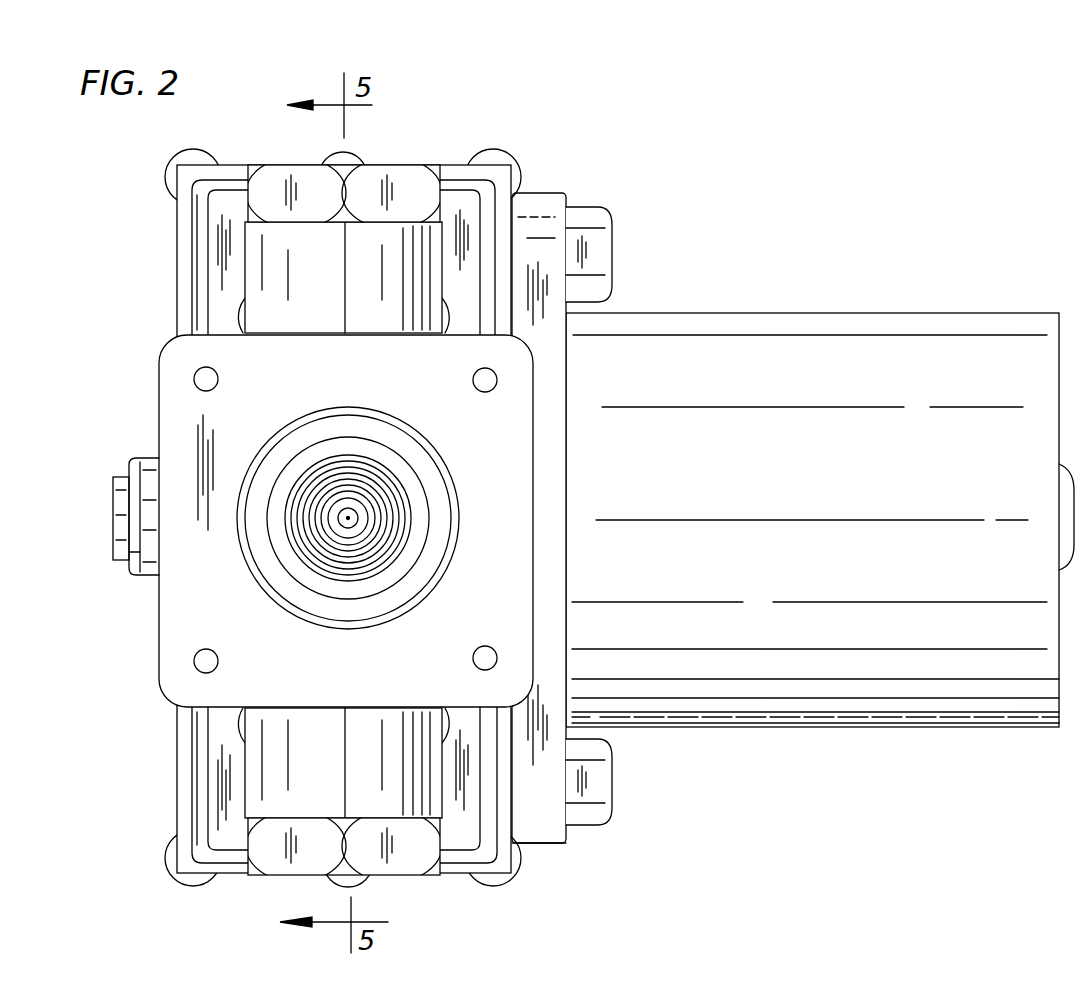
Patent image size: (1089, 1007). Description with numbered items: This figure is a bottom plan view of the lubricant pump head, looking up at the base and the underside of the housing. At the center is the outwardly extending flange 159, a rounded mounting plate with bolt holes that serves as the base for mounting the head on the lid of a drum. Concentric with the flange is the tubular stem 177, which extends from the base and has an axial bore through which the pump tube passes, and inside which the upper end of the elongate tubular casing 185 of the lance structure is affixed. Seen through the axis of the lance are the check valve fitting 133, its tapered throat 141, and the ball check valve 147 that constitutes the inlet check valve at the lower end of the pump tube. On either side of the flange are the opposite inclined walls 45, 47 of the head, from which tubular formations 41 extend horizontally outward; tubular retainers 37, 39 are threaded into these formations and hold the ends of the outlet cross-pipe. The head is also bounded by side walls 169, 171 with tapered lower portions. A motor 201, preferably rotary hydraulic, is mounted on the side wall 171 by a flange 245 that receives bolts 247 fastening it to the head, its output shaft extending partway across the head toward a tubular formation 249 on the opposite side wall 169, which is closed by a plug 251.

The tubular retainer 37 is at (283, 853).
The tubular retainer 39 is at (385, 175).
The tubular formation 41 is at (303, 280).
The inclined wall 45 is at (222, 750).
The inclined wall 47 is at (227, 210).
The check valve fitting 133 is at (300, 572).
The tapered throat 141 is at (356, 513).
The ball check valve 147 is at (353, 526).
The flange 159 is at (177, 643).
The side wall 169 is at (177, 312).
The side wall 171 is at (530, 210).
The tubular stem 177 is at (397, 418).
The tubular casing 185 is at (420, 473).
The motor 201 is at (838, 502).
The flange 245 is at (543, 845).
The bolts 247 is at (603, 255).
The tubular formation 249 is at (142, 578).
The plug 251 is at (112, 508).